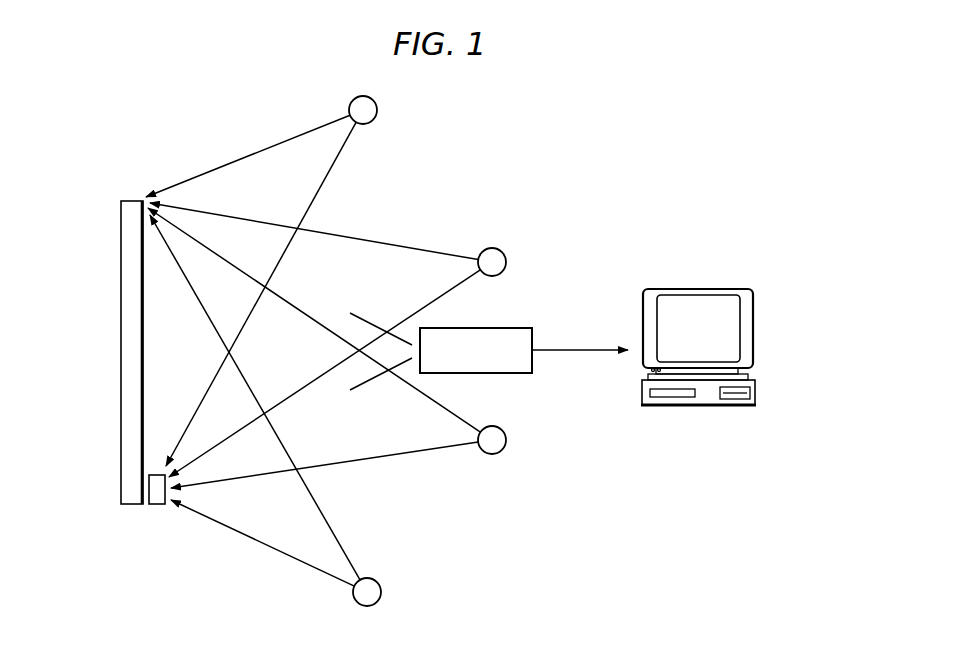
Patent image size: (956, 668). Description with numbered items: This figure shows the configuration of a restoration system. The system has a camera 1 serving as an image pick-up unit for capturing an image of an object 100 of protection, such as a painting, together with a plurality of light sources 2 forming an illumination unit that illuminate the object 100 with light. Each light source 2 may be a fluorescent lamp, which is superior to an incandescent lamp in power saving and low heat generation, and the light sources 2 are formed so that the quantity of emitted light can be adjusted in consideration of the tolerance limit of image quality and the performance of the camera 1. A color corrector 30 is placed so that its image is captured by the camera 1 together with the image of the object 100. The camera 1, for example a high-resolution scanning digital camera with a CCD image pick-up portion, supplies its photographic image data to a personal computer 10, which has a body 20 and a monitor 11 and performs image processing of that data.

The camera 1 is at (477, 328).
The light sources 2 is at (378, 108).
The personal computer 10 is at (730, 327).
The monitor 11 is at (700, 290).
The body 20 is at (757, 393).
The color corrector 30 is at (155, 505).
The object of protection 100 is at (121, 355).